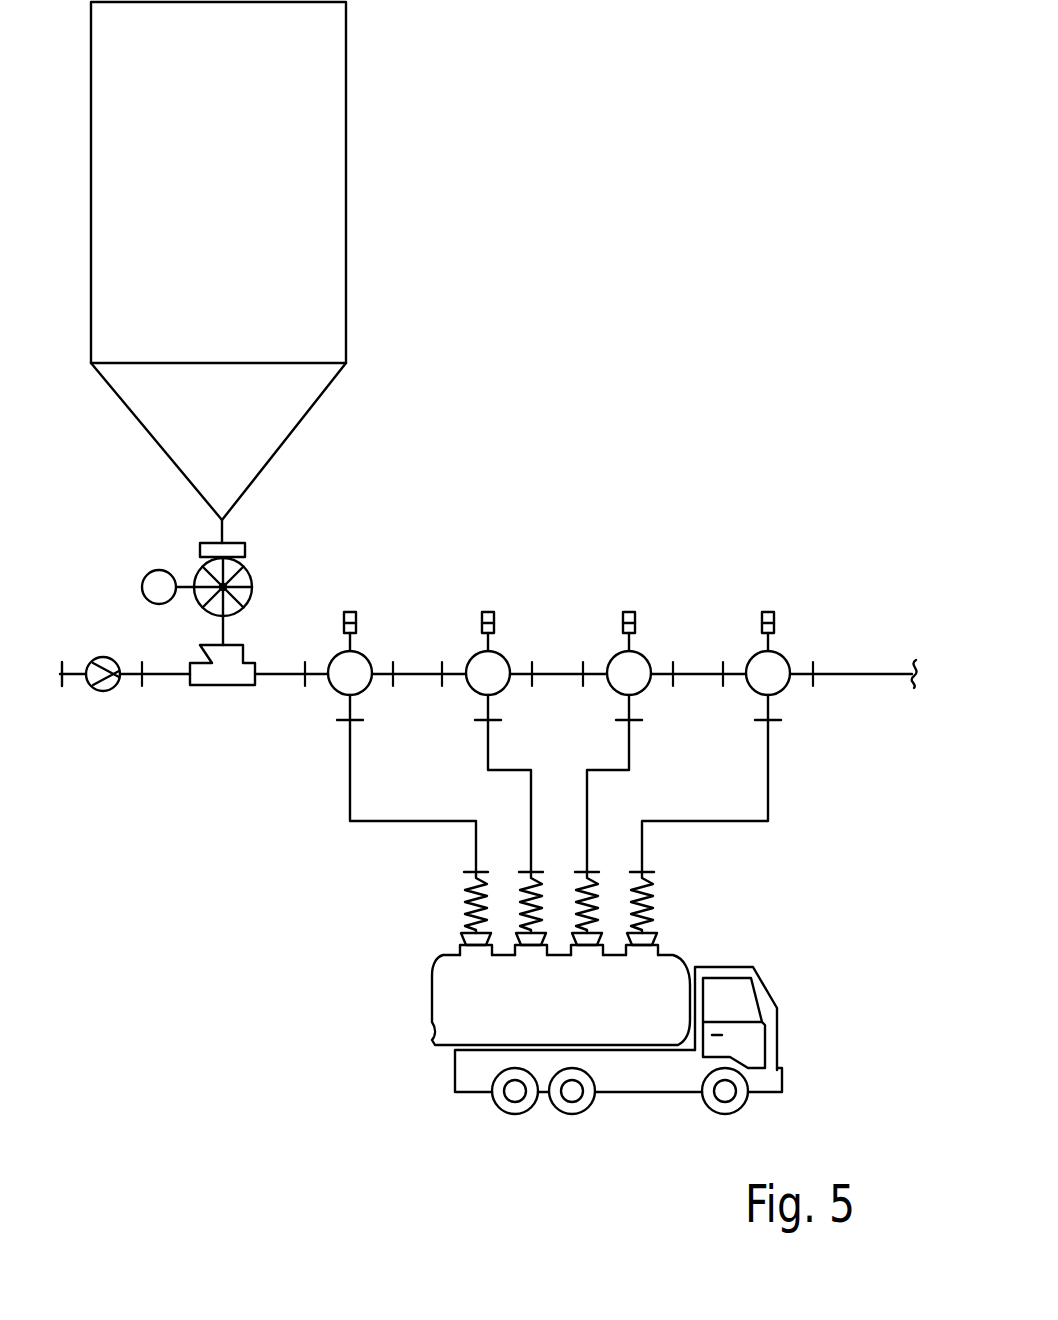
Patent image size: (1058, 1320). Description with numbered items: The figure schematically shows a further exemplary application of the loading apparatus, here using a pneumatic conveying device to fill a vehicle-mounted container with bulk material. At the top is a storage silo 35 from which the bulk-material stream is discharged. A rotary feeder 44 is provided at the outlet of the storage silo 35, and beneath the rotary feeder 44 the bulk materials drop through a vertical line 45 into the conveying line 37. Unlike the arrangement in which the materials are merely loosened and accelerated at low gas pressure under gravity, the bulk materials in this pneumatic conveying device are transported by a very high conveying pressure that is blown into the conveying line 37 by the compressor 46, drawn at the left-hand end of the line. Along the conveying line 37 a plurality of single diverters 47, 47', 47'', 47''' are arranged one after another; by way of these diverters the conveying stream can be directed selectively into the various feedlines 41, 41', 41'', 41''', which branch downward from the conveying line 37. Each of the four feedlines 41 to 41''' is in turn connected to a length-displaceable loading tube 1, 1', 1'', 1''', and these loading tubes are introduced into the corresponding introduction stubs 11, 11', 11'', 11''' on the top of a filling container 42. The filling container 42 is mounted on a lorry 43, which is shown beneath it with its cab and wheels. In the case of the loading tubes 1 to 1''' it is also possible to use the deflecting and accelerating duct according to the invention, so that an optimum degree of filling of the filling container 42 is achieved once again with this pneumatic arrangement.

The storage silo 35 is at (230, 220).
The rotary feeder 44 is at (246, 578).
The vertical line 45 is at (223, 628).
The compressor 46 is at (97, 692).
The conveying line 37 is at (280, 674).
The single diverter 47 is at (784, 647).
The single diverter 47' is at (647, 647).
The single diverter 47'' is at (510, 647).
The single diverter 47''' is at (375, 647).
The feedline 41 is at (735, 783).
The feedline 41' is at (641, 783).
The feedline 41'' is at (519, 783).
The feedline 41''' is at (406, 783).
The loading tube 1 is at (634, 908).
The loading tube 1' is at (577, 908).
The loading tube 1'' is at (521, 908).
The loading tube 1''' is at (460, 908).
The introduction stub 11 is at (642, 972).
The introduction stub 11' is at (590, 972).
The introduction stub 11'' is at (531, 972).
The introduction stub 11''' is at (477, 972).
The filling container 42 is at (572, 1030).
The lorry 43 is at (518, 1133).